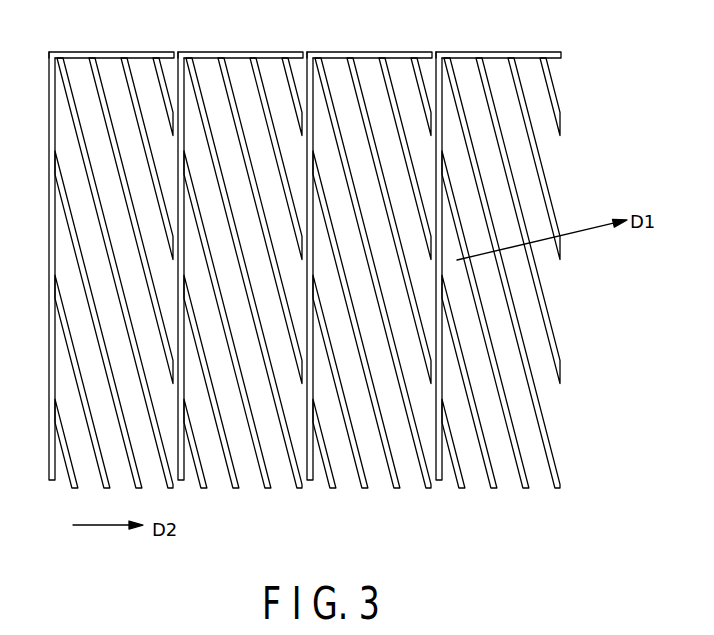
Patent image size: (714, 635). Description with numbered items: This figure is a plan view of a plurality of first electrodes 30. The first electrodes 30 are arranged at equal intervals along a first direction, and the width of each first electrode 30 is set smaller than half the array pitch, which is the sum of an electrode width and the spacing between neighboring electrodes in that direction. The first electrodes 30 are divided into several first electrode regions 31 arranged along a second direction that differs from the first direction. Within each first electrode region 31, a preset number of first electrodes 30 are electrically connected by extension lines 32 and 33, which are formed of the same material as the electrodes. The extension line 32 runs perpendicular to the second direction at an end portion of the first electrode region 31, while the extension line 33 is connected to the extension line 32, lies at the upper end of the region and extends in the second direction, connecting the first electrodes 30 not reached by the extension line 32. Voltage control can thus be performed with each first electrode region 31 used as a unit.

The first electrode 30 is at (559, 474).
The first electrode region 31 is at (182, 497).
The extension line 32 is at (441, 481).
The extension line 33 is at (497, 51).